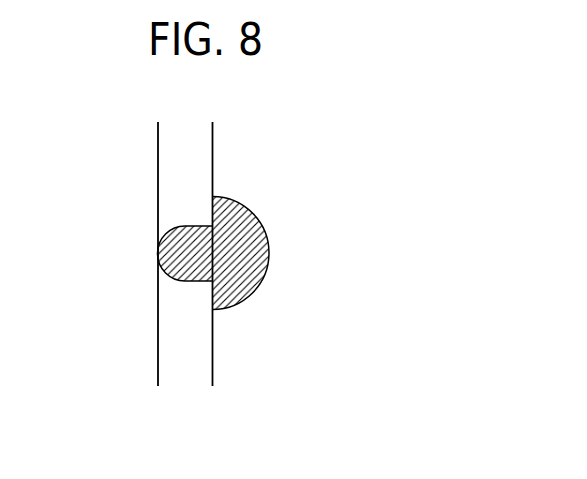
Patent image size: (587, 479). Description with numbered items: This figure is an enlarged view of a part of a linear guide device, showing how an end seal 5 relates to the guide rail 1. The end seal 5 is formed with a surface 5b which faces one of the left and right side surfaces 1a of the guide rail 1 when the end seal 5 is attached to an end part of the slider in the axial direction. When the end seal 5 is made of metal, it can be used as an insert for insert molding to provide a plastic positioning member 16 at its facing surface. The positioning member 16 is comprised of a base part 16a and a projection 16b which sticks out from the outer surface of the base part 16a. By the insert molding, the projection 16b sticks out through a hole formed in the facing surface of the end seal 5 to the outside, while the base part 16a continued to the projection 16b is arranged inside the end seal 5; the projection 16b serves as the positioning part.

The guide rail 1 is at (124, 293).
The side surface of the guide rail 1a is at (158, 182).
The end seal 5 is at (250, 350).
The surface of the end seal 5b is at (212, 146).
The positioning member 16 is at (388, 222).
The base part 16a is at (247, 243).
The projection 16b is at (182, 281).